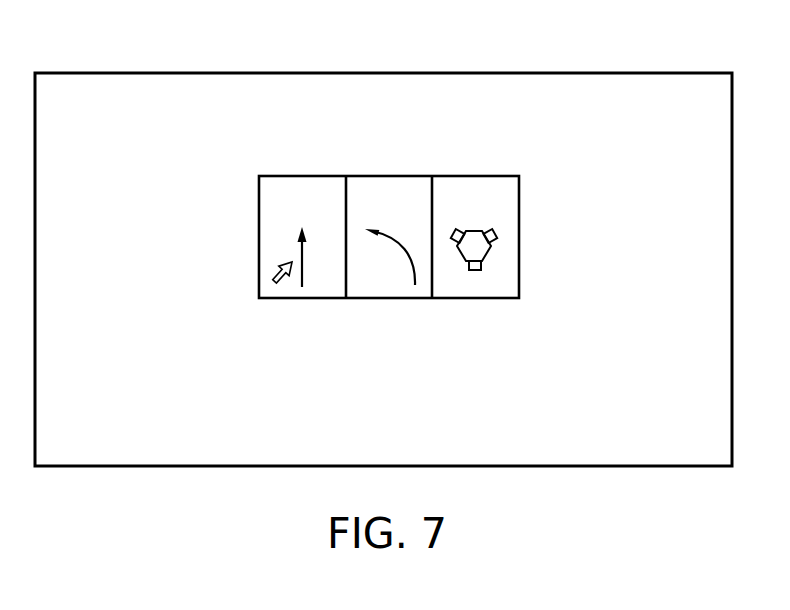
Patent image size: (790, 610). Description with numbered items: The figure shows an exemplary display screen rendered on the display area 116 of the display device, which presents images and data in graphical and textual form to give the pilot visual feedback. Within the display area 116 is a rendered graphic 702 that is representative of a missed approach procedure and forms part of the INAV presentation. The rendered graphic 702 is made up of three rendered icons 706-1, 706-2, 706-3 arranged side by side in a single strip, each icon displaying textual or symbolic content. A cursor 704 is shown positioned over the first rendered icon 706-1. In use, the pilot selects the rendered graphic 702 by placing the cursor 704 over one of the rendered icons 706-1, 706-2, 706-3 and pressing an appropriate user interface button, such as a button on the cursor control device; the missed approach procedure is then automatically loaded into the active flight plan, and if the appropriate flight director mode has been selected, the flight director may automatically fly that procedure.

The display area 116 is at (582, 73).
The rendered graphic 702 is at (593, 214).
The cursor 704 is at (273, 281).
The rendered icon 706-1 is at (283, 298).
The rendered icon 706-2 is at (387, 298).
The rendered icon 706-3 is at (487, 298).